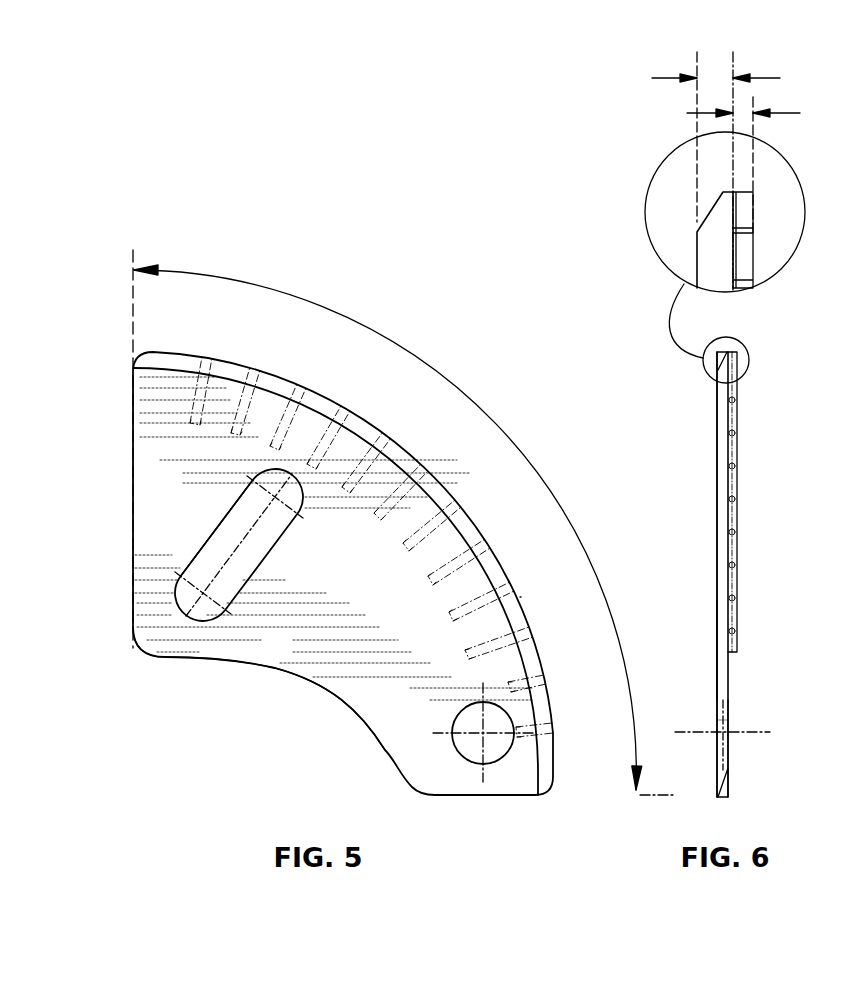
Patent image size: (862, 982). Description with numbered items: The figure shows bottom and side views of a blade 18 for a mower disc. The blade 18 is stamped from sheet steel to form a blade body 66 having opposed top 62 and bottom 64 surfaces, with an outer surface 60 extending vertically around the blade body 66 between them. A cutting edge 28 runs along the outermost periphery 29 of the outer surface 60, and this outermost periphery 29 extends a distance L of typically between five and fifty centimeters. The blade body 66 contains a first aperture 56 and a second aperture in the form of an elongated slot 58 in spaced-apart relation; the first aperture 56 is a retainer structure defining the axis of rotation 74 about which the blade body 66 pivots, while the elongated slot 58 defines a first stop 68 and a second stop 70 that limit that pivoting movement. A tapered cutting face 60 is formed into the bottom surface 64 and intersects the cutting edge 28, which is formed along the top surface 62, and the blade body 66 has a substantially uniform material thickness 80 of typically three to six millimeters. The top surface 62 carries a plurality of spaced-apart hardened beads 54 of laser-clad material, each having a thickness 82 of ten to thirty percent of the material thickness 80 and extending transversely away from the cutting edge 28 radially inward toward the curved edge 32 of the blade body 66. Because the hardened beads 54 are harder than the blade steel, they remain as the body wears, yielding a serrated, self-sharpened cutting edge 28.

In FIG. 5, the blade 18 is at (397, 324).
In FIG. 6, the blade 18 is at (669, 345).
In FIG. 5, the cutting edge 28 is at (437, 477).
In FIG. 5, the outermost periphery 29 is at (520, 597).
In FIG. 6, the outermost periphery 29 is at (861, 756).
In FIG. 5, the curved edge 32 is at (350, 708).
In FIG. 6, the hardened beads 54 is at (738, 420).
In FIG. 5, the first aperture 56 is at (515, 724).
In FIG. 6, the first aperture 56 is at (861, 727).
In FIG. 5, the elongated slot 58 is at (210, 520).
In FIG. 5, the outer surface 60 is at (533, 677).
In FIG. 6, the outer surface 60 is at (705, 220).
In FIG. 6, the top surface 62 is at (729, 688).
In FIG. 6, the bottom surface 64 is at (717, 670).
In FIG. 5, the blade body 66 is at (272, 652).
In FIG. 5, the first stop 68 is at (293, 473).
In FIG. 5, the second stop 70 is at (145, 642).
In FIG. 5, the axis of rotation 74 is at (480, 733).
In FIG. 6, the axis of rotation 74 is at (767, 737).
In FIG. 6, the material thickness 80 is at (660, 77).
In FIG. 6, the thickness 82 is at (795, 112).
In FIG. 5, the distance L is at (568, 519).